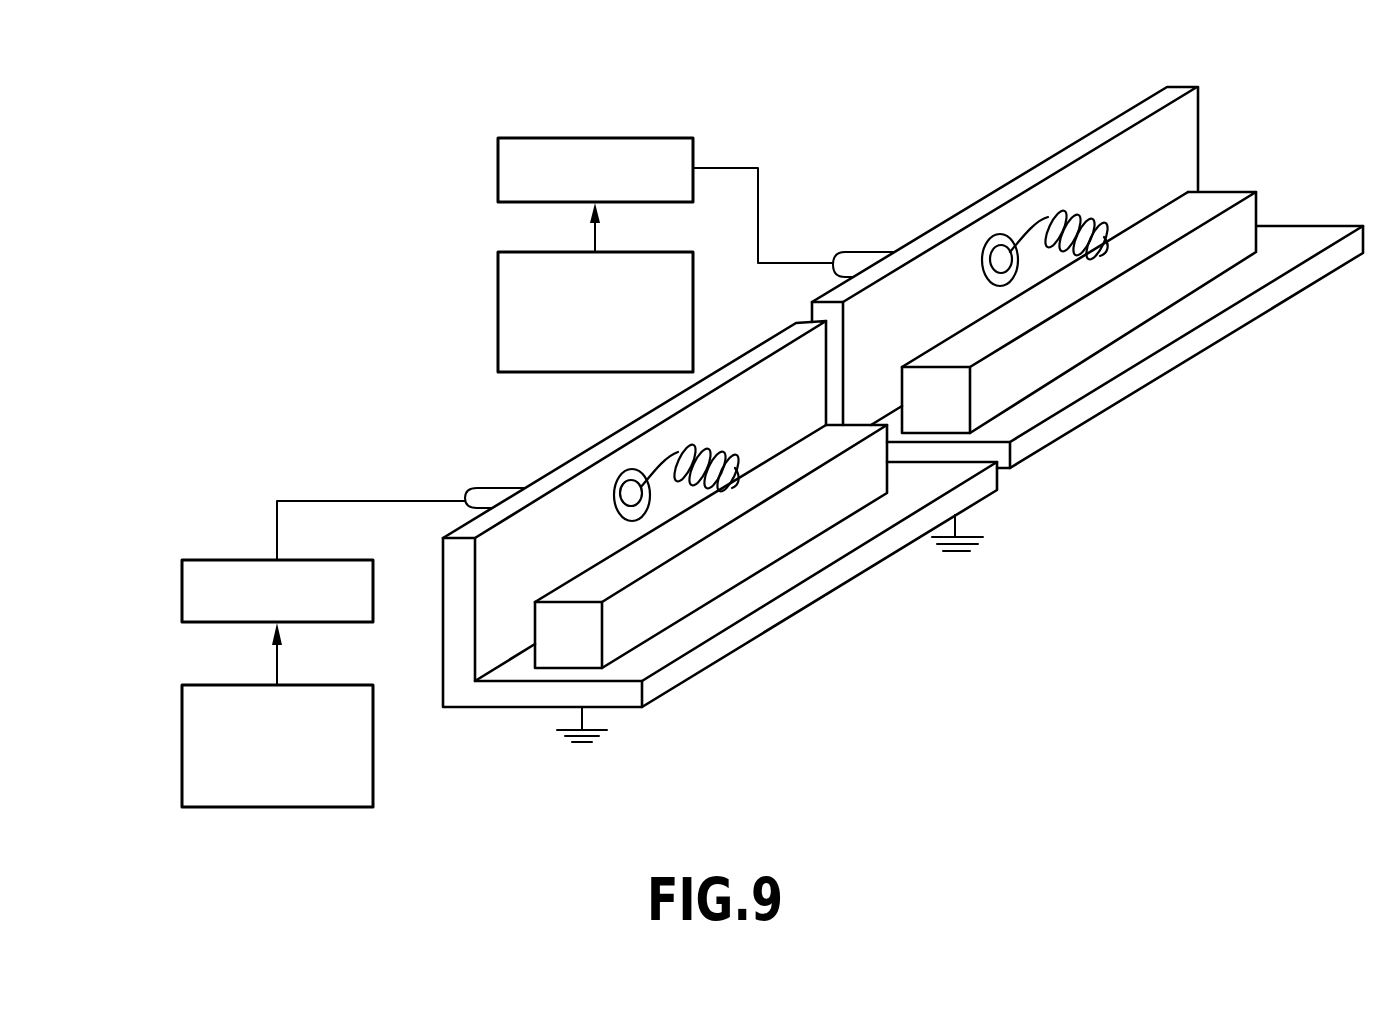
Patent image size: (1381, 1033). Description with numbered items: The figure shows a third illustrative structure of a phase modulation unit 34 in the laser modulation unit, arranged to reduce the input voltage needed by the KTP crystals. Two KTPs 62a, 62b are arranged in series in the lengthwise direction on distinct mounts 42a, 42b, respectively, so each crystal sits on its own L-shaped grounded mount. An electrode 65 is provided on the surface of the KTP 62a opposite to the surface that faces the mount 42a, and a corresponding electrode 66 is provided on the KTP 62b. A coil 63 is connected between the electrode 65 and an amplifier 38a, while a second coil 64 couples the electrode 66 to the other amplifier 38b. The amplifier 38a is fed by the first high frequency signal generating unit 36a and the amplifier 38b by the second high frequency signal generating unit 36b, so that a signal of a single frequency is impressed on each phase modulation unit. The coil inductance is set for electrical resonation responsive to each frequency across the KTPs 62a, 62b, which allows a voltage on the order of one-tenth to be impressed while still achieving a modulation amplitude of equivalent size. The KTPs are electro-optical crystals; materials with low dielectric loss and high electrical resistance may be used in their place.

The phase modulation unit 34 is at (925, 182).
The first high frequency signal generating unit 36a is at (338, 686).
The second high frequency signal generating unit 36b is at (658, 252).
The amplifier 38a is at (323, 562).
The amplifier 38b is at (657, 138).
The mount 42a is at (698, 620).
The mount 42b is at (1112, 390).
The KTP 62a is at (835, 512).
The KTP 62b is at (1172, 287).
The coil 63 is at (700, 446).
The coil 64 is at (1060, 206).
The electrode 65 is at (807, 437).
The electrode 66 is at (1222, 193).